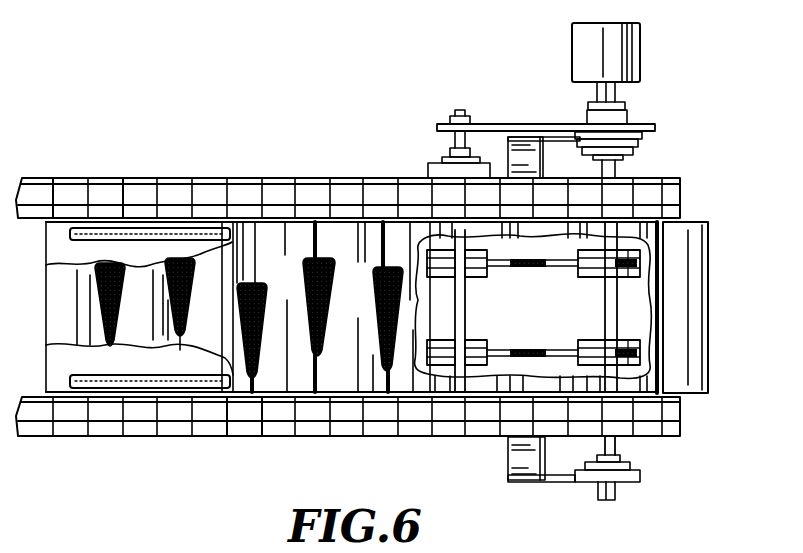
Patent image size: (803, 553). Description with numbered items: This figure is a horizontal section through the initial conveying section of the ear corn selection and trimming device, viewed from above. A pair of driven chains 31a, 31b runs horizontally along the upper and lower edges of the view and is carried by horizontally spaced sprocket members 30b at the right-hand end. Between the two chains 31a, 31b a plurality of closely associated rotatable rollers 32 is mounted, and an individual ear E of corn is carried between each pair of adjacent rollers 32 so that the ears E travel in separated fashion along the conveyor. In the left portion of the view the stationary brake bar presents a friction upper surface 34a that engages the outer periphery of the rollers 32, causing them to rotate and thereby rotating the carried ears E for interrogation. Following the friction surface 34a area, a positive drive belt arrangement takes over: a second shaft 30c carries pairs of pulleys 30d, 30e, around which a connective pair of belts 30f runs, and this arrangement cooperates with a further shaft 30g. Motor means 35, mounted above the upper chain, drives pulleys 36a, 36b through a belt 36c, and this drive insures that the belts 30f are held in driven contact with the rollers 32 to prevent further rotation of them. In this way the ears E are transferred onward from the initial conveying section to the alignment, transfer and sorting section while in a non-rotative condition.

The sprocket member 30b is at (668, 199).
The second shaft 30c is at (450, 372).
The pulleys 30d is at (483, 340).
The pulleys 30e is at (612, 308).
The connective pair of belts 30f is at (432, 340).
The shaft 30g is at (603, 294).
The driven chain 31a is at (240, 434).
The driven chain 31b is at (97, 178).
The rotatable rollers 32 is at (288, 245).
The friction upper surface 34a is at (112, 390).
The motor means 35 is at (641, 47).
The pulley 36a is at (452, 118).
The pulley 36b is at (637, 125).
The belt 36c is at (498, 124).
The ear of corn E is at (366, 304).